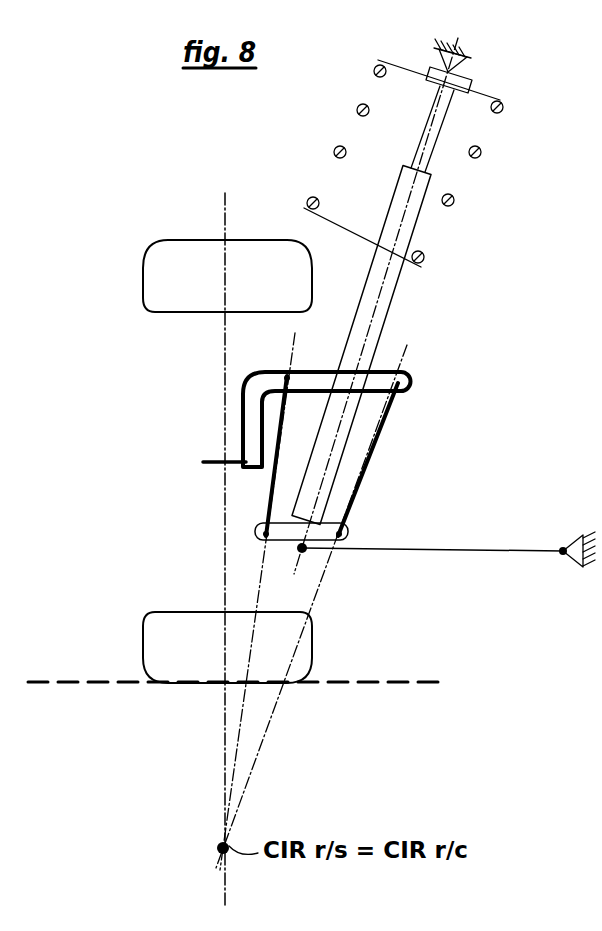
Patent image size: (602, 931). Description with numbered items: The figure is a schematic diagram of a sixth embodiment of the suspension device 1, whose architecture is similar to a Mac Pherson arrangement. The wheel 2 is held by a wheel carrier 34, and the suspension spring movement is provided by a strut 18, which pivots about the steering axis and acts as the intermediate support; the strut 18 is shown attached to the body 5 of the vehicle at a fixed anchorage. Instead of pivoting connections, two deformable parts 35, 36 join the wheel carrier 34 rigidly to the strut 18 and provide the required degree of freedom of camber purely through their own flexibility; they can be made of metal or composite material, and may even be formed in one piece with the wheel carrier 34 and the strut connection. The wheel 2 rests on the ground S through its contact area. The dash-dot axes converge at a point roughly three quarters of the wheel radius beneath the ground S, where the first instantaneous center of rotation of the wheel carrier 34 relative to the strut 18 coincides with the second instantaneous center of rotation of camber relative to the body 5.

The suspension device 1 is at (367, 306).
The wheel 2 is at (223, 568).
The body 5 is at (573, 535).
The strut 18 is at (388, 281).
The wheel carrier 34 is at (399, 393).
The deformable part 35 is at (372, 457).
The deformable part 36 is at (300, 436).
The ground S is at (373, 683).